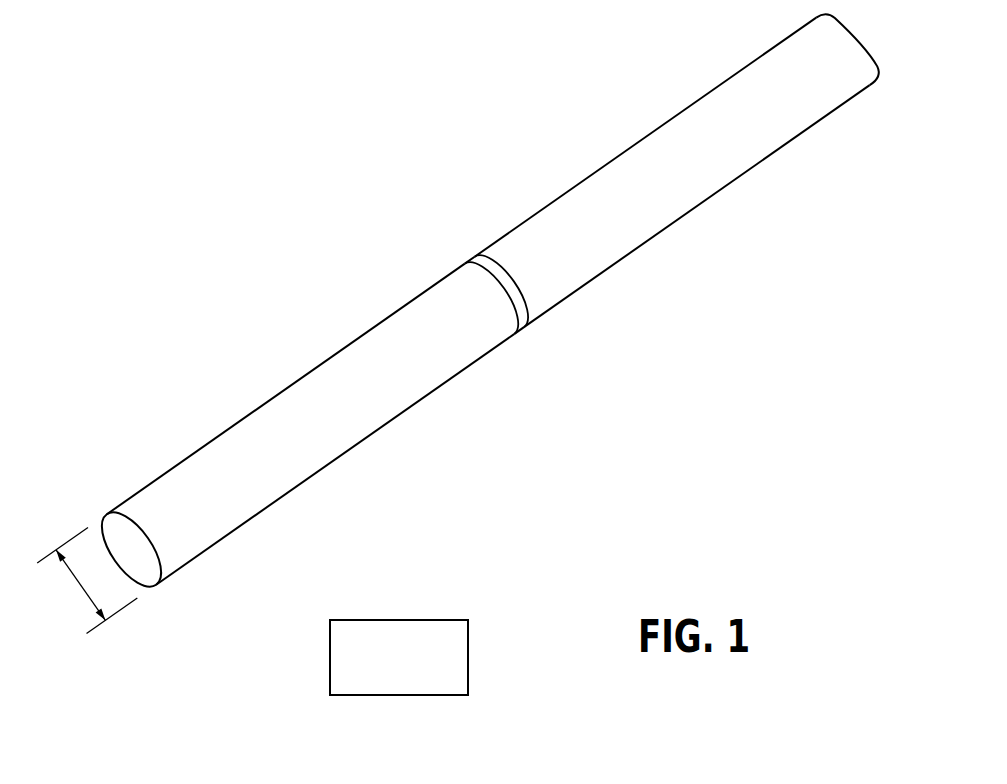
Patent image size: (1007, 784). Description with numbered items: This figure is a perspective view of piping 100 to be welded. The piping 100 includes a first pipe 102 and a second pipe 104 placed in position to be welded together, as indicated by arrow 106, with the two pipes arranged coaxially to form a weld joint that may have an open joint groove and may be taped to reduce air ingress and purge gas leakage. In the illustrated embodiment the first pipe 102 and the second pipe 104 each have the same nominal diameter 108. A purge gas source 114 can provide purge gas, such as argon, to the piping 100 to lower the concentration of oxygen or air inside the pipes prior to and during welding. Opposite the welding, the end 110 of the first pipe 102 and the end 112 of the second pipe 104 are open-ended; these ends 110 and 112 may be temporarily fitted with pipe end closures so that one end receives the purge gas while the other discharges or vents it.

The piping 100 is at (132, 406).
The first pipe 102 is at (315, 405).
The second pipe 104 is at (597, 215).
The arrow 106 is at (523, 345).
The nominal diameter 108 is at (73, 588).
The end of the first pipe 110 is at (150, 590).
The end of the second pipe 112 is at (880, 65).
The purge gas source 114 is at (468, 652).